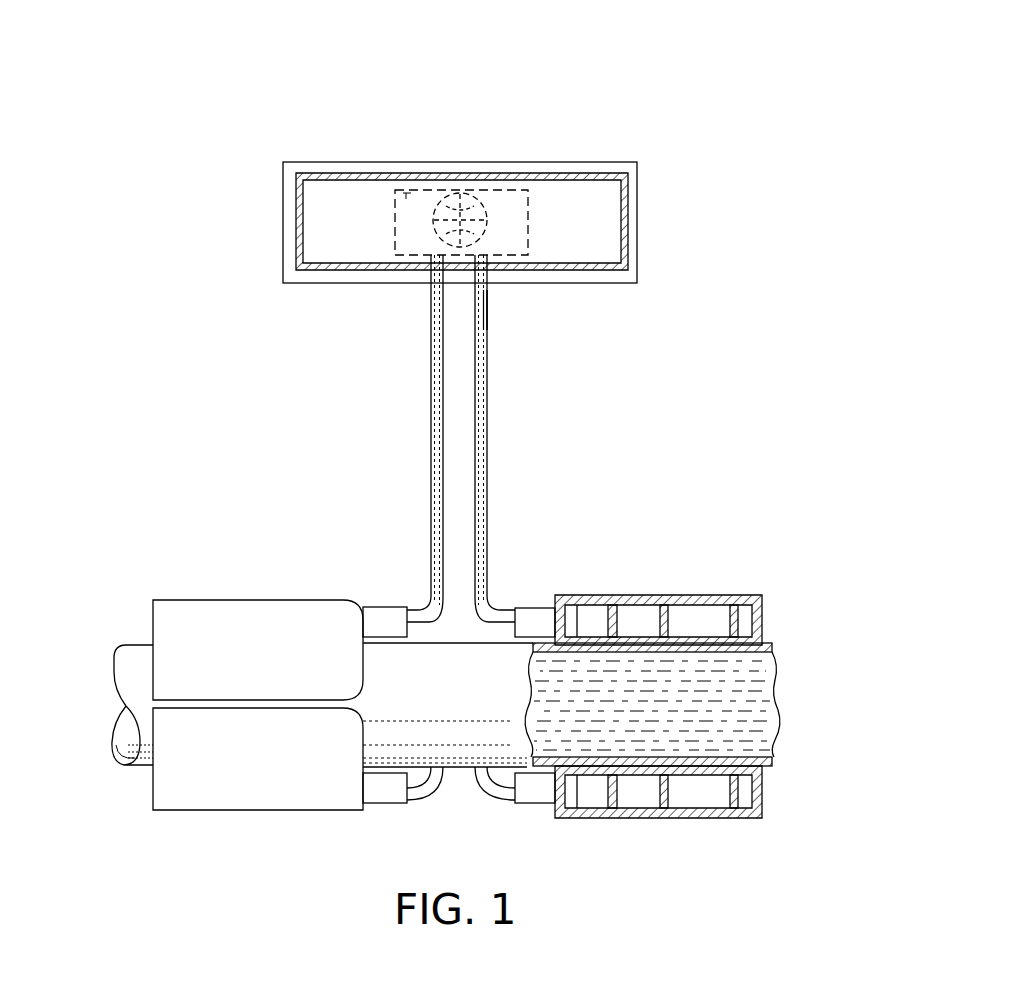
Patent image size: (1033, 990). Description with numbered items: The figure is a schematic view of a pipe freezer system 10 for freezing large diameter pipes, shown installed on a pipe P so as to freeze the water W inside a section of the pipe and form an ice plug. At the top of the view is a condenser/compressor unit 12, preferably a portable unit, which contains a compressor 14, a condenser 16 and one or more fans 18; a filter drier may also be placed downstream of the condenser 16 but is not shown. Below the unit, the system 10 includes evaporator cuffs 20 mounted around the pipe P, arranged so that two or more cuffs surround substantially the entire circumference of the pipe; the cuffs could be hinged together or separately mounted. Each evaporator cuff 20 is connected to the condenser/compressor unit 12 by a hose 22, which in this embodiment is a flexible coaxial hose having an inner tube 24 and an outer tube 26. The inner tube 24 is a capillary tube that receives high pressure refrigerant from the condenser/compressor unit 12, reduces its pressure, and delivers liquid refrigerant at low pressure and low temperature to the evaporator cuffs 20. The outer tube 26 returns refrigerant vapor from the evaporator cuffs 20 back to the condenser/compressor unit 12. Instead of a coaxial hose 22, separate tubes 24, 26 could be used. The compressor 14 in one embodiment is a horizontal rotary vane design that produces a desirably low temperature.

The pipe freezer system 10 is at (616, 80).
The condenser/compressor unit 12 is at (553, 168).
The compressor 14 is at (413, 183).
The condenser 16 is at (296, 190).
The fan 18 is at (480, 185).
The evaporator cuff 20 is at (213, 620).
The hose 22 is at (431, 432).
The inner tube 24 is at (487, 322).
The outer tube 26 is at (487, 302).
The pipe P is at (600, 777).
The water W is at (703, 738).